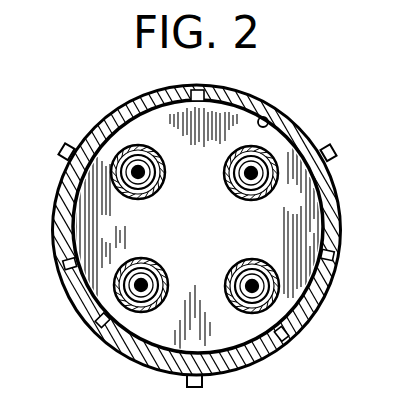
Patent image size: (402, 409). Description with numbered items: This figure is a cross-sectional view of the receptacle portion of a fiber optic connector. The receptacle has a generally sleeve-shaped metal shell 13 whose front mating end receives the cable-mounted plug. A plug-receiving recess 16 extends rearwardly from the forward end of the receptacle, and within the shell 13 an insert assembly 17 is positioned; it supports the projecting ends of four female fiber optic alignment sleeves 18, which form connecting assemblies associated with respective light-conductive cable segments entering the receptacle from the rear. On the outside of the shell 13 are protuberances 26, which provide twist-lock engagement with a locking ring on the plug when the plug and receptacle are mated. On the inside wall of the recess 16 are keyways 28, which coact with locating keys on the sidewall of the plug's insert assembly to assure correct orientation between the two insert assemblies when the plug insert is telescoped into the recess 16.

The metal shell 13 is at (315, 316).
The plug-receiving recess 16 is at (268, 118).
The insert assembly 17 is at (305, 208).
The female fiber optic alignment sleeves 18 is at (230, 183).
The protuberances 26 is at (329, 146).
The keyways 28 is at (285, 346).